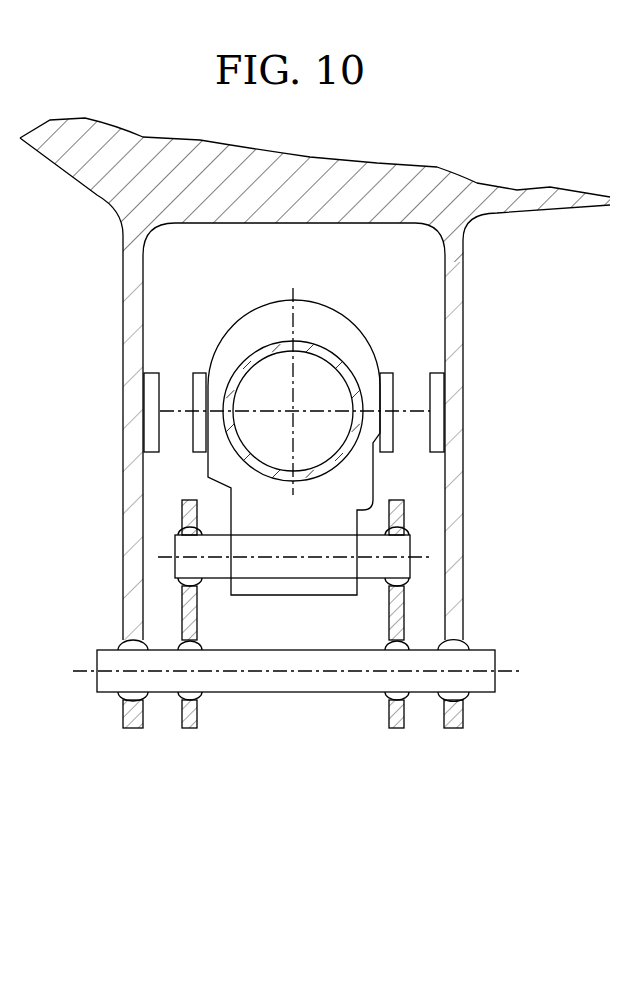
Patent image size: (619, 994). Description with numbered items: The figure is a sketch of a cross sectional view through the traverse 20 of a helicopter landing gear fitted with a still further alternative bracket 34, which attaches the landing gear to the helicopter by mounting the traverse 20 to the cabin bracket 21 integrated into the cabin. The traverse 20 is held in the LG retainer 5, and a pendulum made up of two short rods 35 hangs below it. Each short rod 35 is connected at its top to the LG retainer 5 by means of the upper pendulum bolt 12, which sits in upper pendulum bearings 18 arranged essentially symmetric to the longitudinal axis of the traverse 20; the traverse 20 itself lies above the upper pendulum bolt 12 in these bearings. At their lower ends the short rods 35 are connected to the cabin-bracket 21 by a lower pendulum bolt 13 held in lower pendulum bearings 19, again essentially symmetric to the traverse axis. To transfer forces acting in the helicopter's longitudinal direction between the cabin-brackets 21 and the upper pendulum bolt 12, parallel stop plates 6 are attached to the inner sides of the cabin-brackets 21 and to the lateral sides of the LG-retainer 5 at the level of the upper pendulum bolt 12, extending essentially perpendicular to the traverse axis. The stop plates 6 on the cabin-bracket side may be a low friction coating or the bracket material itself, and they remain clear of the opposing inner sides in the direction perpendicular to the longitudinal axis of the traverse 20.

The LG retainer 5 is at (274, 302).
The stop plates 6 is at (200, 372).
The upper pendulum bolt 12 is at (405, 547).
The lower pendulum bolt 13 is at (485, 662).
The upper pendulum bearings 18 is at (185, 498).
The lower pendulum bearings 19 is at (182, 698).
The traverse 20 is at (343, 385).
The cabin bracket 21 is at (123, 300).
The alternative bracket 34 is at (378, 290).
The short rods 35 is at (396, 607).